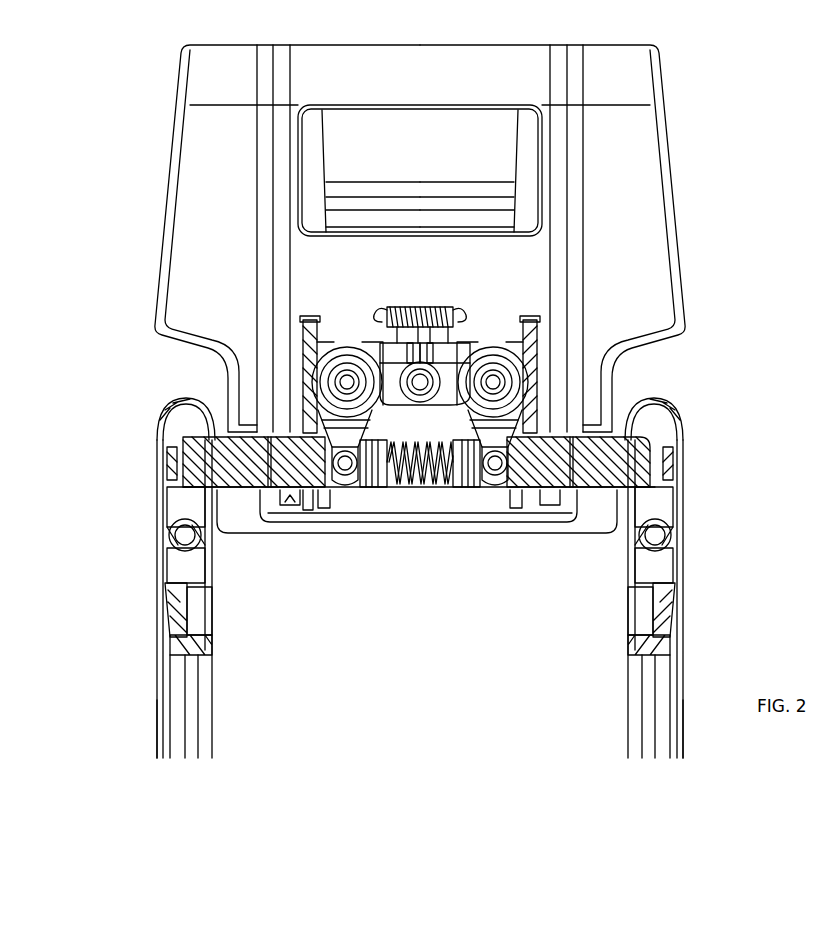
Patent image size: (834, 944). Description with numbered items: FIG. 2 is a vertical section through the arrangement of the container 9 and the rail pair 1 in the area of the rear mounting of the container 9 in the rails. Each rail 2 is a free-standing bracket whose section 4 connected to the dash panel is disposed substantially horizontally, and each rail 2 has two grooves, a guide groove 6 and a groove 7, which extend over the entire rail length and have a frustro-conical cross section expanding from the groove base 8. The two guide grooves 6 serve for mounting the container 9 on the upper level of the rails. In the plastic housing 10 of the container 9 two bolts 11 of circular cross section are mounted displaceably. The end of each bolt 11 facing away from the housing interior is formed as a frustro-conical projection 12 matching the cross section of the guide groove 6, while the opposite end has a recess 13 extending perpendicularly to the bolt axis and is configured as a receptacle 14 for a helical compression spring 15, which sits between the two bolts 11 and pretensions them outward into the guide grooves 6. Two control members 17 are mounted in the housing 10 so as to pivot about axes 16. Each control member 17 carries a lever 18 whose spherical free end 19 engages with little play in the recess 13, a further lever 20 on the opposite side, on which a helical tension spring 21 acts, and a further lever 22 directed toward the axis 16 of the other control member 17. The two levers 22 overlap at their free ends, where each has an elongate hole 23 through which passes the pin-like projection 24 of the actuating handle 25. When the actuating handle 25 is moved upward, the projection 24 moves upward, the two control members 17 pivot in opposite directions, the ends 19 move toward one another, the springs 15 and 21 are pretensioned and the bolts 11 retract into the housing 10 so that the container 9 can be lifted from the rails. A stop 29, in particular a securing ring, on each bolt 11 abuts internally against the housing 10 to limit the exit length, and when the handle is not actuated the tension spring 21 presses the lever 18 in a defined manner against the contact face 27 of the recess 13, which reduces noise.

The rail pair 1 is at (590, 680).
The rail 2 is at (400, 563).
The section of the rails connected to the dash panel 4 is at (155, 500).
The guide groove 6 is at (168, 480).
The groove 7 is at (205, 615).
The groove base 8 is at (167, 455).
The container 9 is at (704, 229).
The housing 10 is at (165, 208).
The bolt 11 is at (287, 495).
The projection 12 is at (212, 432).
The recess 13 is at (337, 475).
The receptacle 14 is at (385, 488).
The helical compression spring 15 is at (423, 485).
The axis 16 is at (347, 380).
The control member 17 is at (318, 333).
The lever 18 is at (366, 434).
The spherical free end 19 is at (322, 500).
The lever 20 is at (380, 365).
The helical tension spring 21 is at (430, 320).
The lever 22 is at (440, 402).
The elongate hole 23 is at (412, 372).
The pin-like projection 24 is at (428, 372).
The actuating handle 25 is at (480, 300).
The contact face 27 is at (315, 505).
The stop 29 is at (272, 437).